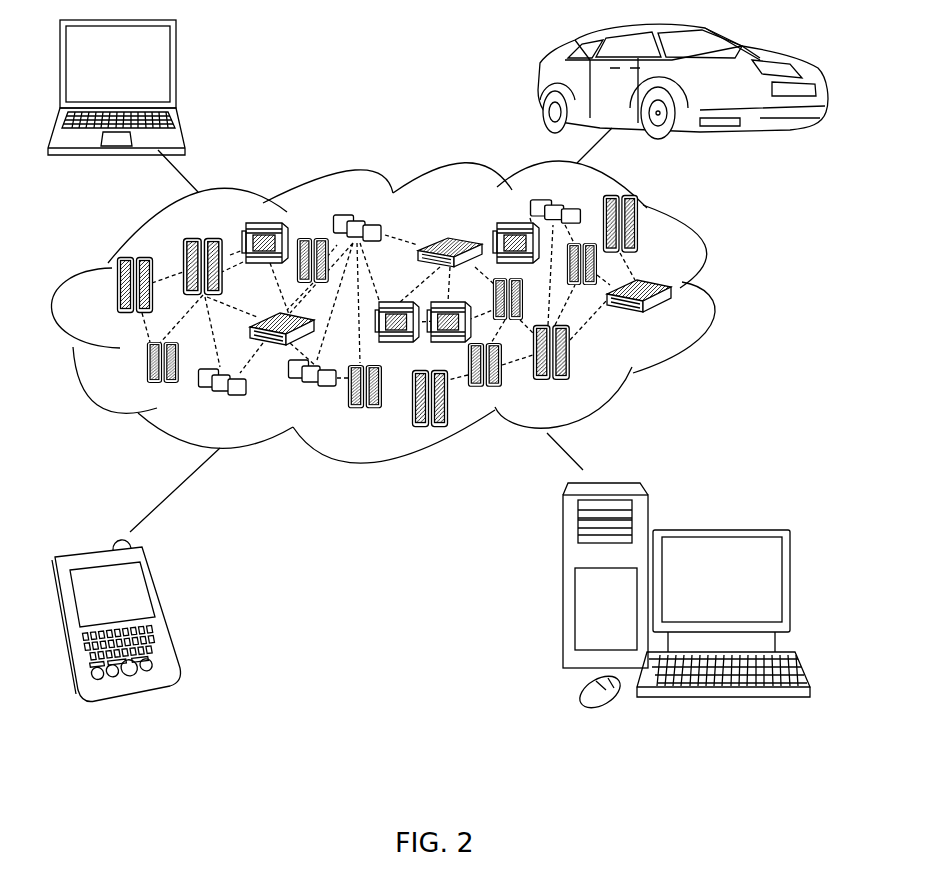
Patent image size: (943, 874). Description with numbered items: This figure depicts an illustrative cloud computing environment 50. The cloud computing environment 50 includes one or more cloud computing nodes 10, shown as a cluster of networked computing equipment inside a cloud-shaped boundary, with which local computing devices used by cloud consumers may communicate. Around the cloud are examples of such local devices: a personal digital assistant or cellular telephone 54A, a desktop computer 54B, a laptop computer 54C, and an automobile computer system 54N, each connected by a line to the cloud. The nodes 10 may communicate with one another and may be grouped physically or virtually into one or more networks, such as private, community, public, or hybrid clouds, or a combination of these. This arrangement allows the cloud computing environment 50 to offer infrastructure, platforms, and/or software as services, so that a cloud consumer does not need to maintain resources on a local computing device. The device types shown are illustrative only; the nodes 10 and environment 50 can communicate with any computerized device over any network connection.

The cloud computing environment 50 is at (409, 312).
The cloud computing node 10 is at (672, 318).
The personal digital assistant or cellular telephone 54A is at (165, 603).
The desktop computer 54B is at (718, 528).
The laptop computer 54C is at (173, 72).
The automobile computer system 54N is at (535, 82).